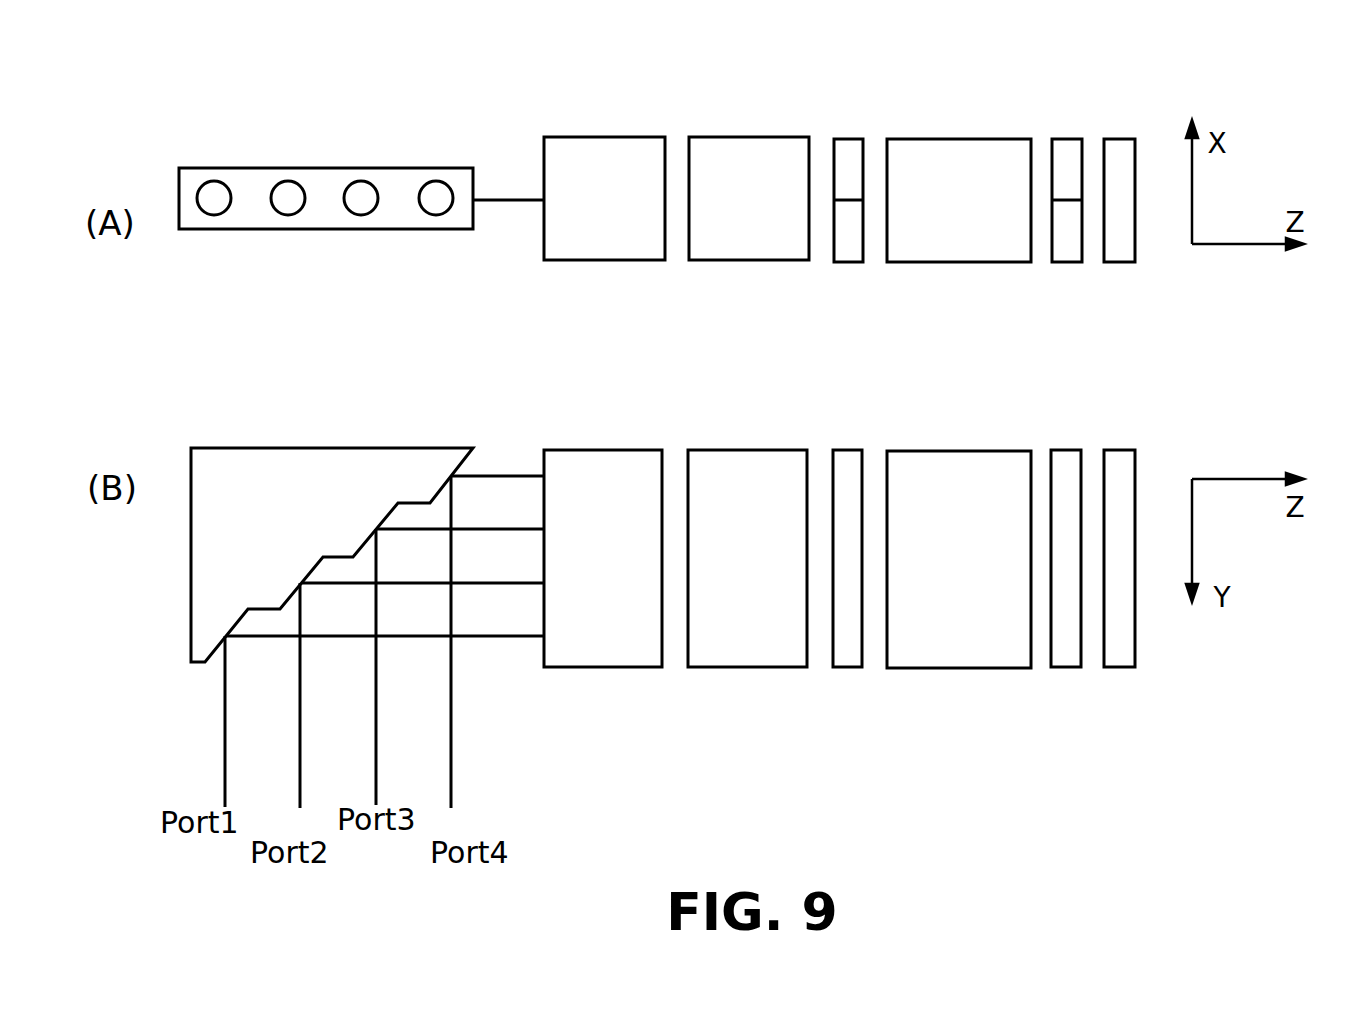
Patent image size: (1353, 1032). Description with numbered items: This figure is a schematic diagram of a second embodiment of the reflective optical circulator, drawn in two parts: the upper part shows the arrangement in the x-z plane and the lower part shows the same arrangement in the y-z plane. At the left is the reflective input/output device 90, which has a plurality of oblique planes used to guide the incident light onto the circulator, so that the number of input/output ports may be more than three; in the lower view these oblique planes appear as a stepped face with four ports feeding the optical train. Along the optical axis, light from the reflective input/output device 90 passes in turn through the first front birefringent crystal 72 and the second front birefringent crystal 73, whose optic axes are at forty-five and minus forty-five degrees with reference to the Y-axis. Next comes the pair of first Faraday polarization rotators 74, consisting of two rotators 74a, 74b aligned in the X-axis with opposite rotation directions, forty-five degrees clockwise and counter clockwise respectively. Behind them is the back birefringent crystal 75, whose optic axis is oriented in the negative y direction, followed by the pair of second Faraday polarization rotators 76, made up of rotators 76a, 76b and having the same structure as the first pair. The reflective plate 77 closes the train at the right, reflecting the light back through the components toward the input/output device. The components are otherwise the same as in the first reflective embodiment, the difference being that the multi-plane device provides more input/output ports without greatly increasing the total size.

The reflective input/output device 90 is at (332, 175).
The first front birefringent crystal 72 is at (600, 240).
The second front birefringent crystal 73 is at (747, 242).
The pair of first Faraday polarization rotators 74 is at (847, 477).
The first Faraday polarization rotator 74a is at (845, 155).
The first Faraday polarization rotator 74b is at (848, 248).
The back birefringent crystal 75 is at (947, 243).
The pair of second Faraday polarization rotators 76 is at (1068, 477).
The second Faraday polarization rotator 76a is at (1068, 160).
The second Faraday polarization rotator 76b is at (1070, 248).
The reflective plate 77 is at (1118, 243).